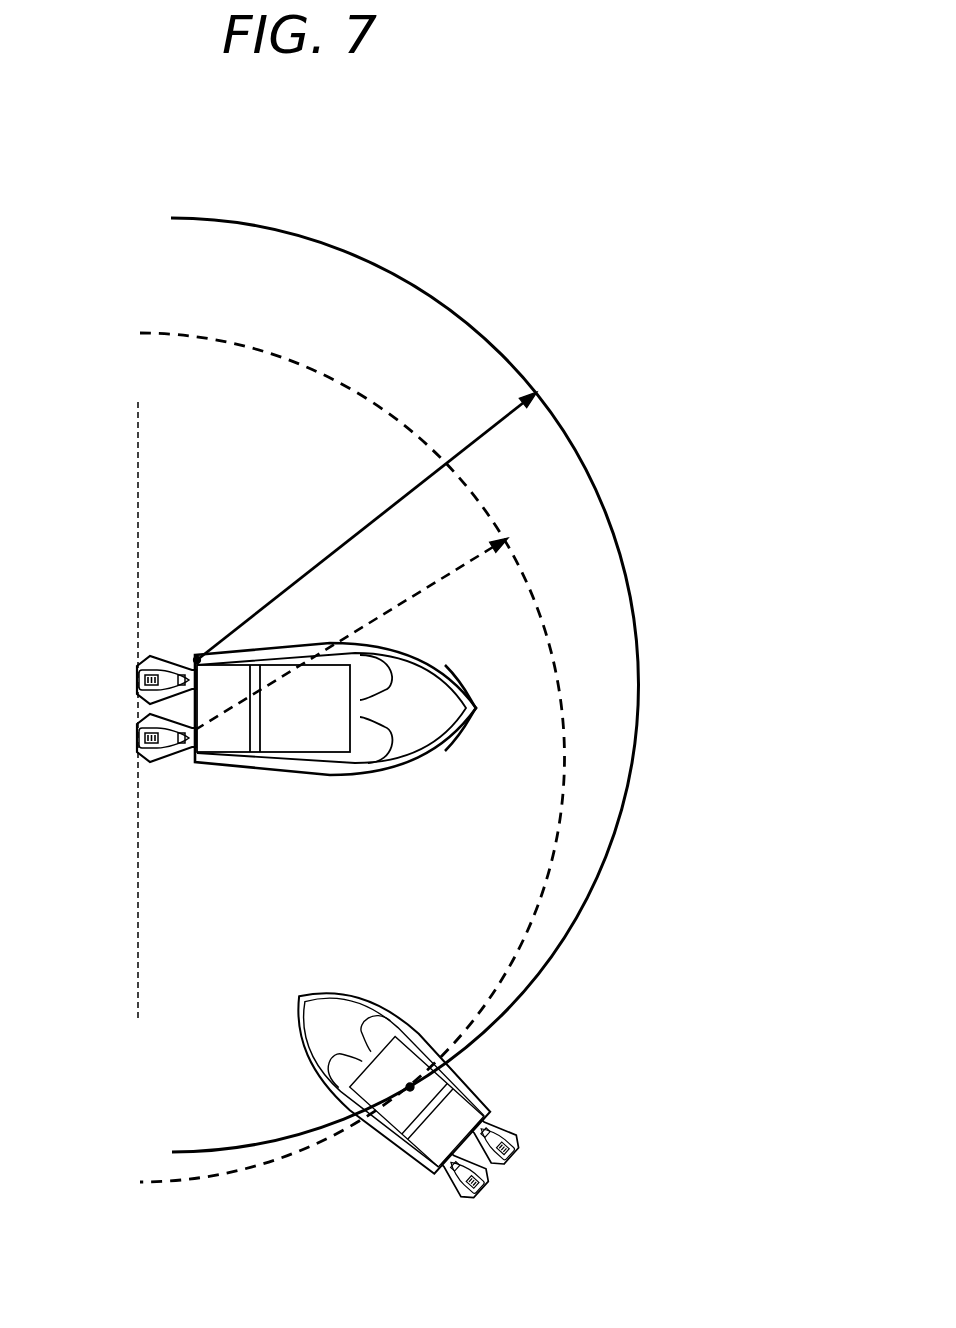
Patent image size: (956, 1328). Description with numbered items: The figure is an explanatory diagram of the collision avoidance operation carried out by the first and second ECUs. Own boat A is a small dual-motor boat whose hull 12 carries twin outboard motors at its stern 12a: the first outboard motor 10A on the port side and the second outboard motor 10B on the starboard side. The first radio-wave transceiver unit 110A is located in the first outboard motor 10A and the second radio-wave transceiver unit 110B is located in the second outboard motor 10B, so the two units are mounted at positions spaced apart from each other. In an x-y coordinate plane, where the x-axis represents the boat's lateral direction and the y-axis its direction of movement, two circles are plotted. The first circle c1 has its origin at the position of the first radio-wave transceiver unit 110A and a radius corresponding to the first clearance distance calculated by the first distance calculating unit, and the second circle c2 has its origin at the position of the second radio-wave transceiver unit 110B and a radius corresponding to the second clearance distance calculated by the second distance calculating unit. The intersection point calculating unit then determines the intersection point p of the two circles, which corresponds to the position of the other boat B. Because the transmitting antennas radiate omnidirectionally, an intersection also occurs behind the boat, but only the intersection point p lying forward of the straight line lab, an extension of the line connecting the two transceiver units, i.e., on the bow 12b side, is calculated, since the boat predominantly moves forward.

The first outboard motor 10A is at (136, 643).
The second outboard motor 10B is at (140, 765).
The first radio-wave transceiver unit 110A is at (178, 678).
The second radio-wave transceiver unit 110B is at (175, 757).
The hull 12 is at (417, 763).
The stern 12a is at (197, 660).
The bow 12b is at (478, 710).
The first circle c1 is at (617, 532).
The second circle c2 is at (493, 517).
The straight line lab is at (137, 473).
The intersection point p is at (407, 1092).